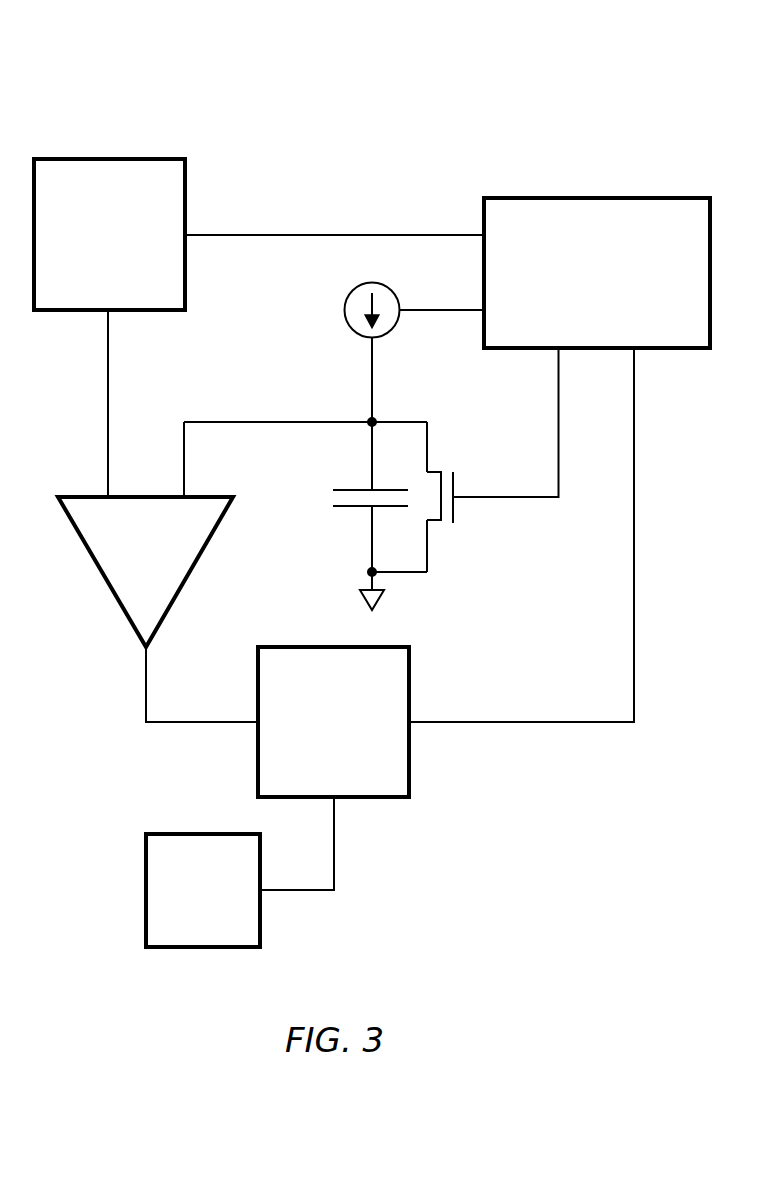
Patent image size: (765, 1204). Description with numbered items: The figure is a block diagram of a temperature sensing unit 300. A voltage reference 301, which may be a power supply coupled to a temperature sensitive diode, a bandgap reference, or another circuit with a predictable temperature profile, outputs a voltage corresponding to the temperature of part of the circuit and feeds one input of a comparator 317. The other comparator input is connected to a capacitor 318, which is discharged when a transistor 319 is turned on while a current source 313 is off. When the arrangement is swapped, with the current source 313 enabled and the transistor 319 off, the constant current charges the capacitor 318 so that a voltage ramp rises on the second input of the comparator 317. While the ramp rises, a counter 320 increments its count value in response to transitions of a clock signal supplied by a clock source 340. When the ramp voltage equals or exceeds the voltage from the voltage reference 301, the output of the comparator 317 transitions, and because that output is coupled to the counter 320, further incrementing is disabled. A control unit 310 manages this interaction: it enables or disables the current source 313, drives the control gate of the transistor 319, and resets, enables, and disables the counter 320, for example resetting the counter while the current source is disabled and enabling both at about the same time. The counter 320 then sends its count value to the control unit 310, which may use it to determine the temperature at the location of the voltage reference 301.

The temperature sensing unit 300 is at (613, 38).
The voltage reference 301 is at (91, 274).
The control unit 310 is at (580, 298).
The current source 313 is at (280, 358).
The comparator 317 is at (131, 568).
The capacitor 318 is at (344, 546).
The transistor 319 is at (504, 460).
The counter 320 is at (317, 748).
The clock source 340 is at (186, 930).